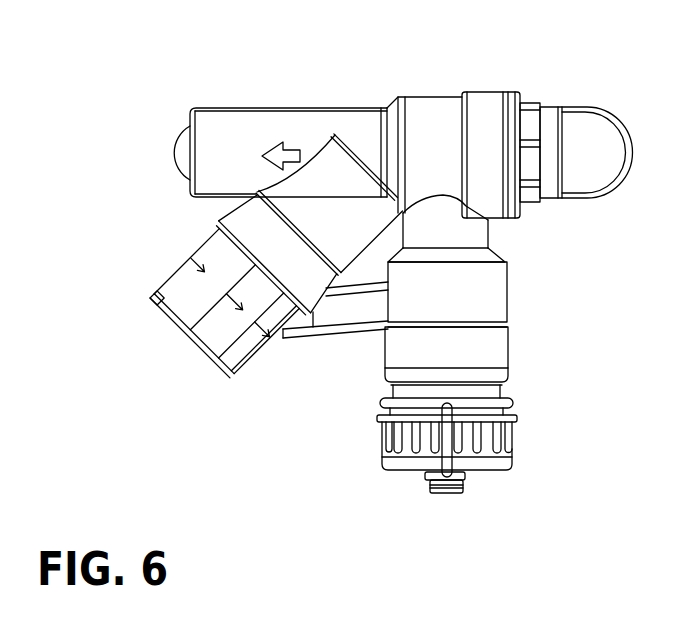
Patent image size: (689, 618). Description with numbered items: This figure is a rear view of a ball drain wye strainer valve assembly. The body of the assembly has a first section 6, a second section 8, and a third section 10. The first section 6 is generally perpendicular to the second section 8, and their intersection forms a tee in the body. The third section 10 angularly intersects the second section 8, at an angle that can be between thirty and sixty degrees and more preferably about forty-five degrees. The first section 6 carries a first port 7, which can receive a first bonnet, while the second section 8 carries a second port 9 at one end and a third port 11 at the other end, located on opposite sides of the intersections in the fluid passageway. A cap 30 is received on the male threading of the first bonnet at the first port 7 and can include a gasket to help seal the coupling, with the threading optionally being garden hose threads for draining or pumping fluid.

The first section 6 is at (467, 256).
The first port 7 is at (393, 355).
The second section 8 is at (372, 137).
The second port 9 is at (550, 187).
The third section 10 is at (277, 229).
The third port 11 is at (230, 137).
The cap 30 is at (495, 457).